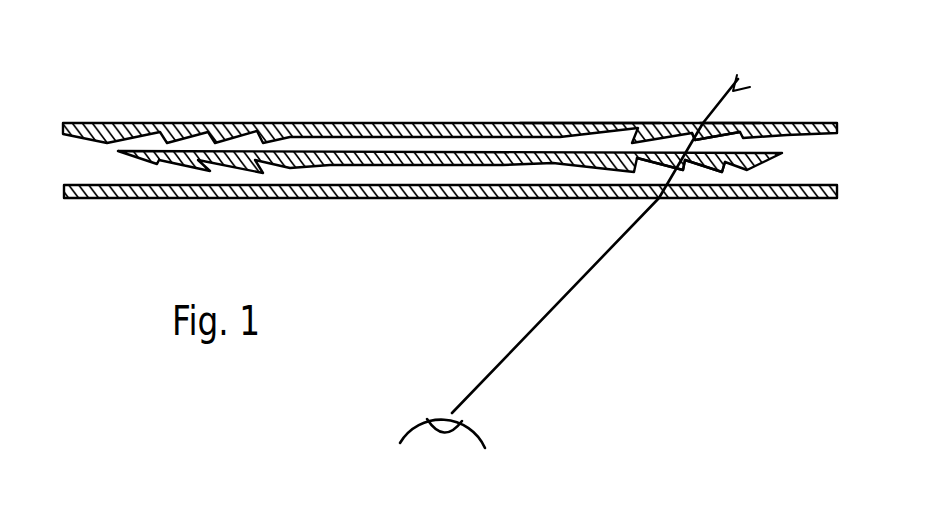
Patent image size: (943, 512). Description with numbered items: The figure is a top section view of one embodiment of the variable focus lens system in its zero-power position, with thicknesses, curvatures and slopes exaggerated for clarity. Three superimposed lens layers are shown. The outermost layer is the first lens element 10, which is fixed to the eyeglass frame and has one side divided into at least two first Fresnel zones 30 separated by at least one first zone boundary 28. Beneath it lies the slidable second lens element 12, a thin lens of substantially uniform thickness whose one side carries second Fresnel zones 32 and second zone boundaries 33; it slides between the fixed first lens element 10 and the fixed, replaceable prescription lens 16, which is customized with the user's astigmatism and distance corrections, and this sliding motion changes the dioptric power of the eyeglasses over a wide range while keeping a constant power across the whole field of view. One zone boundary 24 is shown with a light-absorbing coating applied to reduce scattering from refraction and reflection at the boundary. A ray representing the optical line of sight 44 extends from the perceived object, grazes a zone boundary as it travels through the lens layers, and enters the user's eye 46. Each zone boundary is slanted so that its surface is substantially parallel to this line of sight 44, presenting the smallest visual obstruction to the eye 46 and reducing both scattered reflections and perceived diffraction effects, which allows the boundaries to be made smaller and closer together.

The first lens element 10 is at (175, 123).
The second lens element 12 is at (412, 152).
The prescription lens 16 is at (165, 199).
The zone boundary 24 is at (593, 122).
The first zone boundary 28 is at (690, 139).
The first Fresnel zones 30 is at (715, 121).
The second Fresnel zones 32 is at (707, 160).
The second zone boundary 33 is at (637, 160).
The optical line of sight 44 is at (573, 292).
The user's eye 46 is at (435, 417).